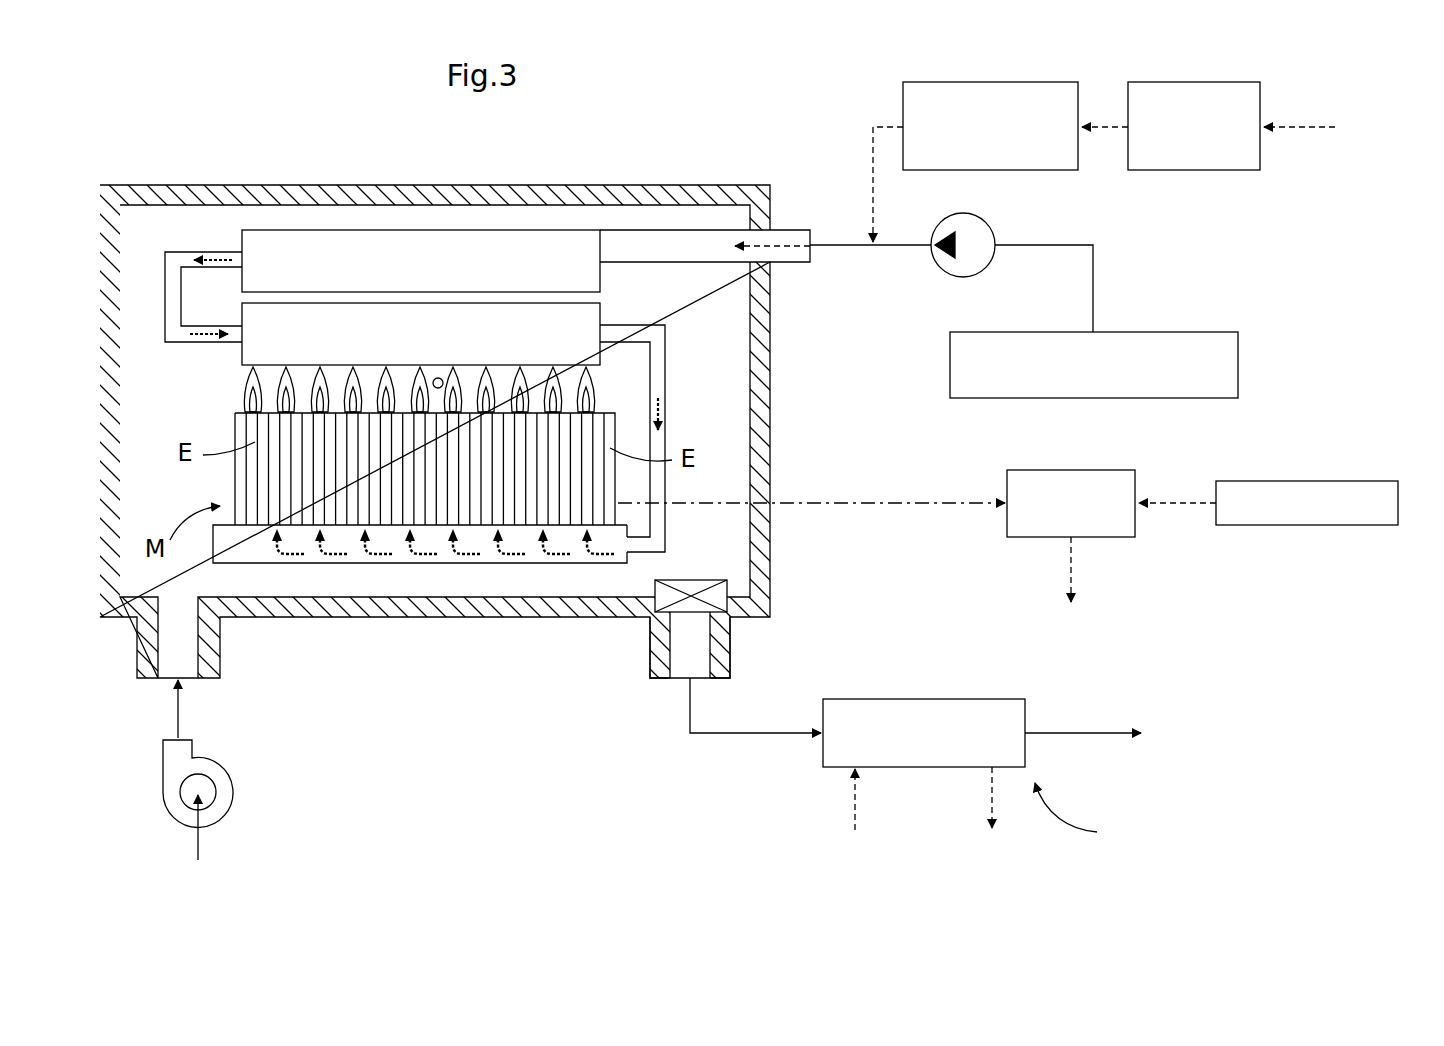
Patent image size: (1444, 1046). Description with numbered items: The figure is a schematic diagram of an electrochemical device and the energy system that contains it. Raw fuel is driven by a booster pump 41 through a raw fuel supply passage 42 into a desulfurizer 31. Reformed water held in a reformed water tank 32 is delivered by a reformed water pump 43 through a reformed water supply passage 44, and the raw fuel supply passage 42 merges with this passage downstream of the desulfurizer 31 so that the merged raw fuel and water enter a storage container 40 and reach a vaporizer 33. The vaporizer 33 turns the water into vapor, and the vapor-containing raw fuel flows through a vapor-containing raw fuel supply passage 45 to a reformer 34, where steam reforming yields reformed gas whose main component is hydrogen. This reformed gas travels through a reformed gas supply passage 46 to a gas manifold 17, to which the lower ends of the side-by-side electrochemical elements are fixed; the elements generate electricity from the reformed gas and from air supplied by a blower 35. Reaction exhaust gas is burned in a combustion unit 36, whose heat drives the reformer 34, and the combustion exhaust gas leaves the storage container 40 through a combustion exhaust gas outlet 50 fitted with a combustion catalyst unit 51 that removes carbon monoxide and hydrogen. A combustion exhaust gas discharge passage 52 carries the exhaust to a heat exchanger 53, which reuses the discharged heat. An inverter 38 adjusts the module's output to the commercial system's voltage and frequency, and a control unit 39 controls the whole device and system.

The gas manifold 17 is at (213, 562).
The desulfurizer 31 is at (995, 82).
The reformed water tank 32 is at (1240, 365).
The vaporizer 33 is at (602, 283).
The reformer 34 is at (240, 318).
The blower 35 is at (163, 775).
The combustion unit 36 is at (608, 368).
The inverter 38 is at (1100, 540).
The control unit 39 is at (1285, 527).
The storage container 40 is at (771, 428).
The booster pump 41 is at (1195, 82).
The raw fuel supply passage 42 is at (1293, 135).
The reformed water pump 43 is at (965, 277).
The reformed water supply passage 44 is at (1094, 282).
The vapor-containing raw fuel supply passage 45 is at (163, 272).
The reformed gas supply passage 46 is at (666, 405).
The combustion exhaust gas outlet 50 is at (678, 668).
The combustion catalyst unit 51 is at (716, 580).
The combustion exhaust gas discharge passage 52 is at (724, 735).
The heat exchanger 53 is at (862, 699).